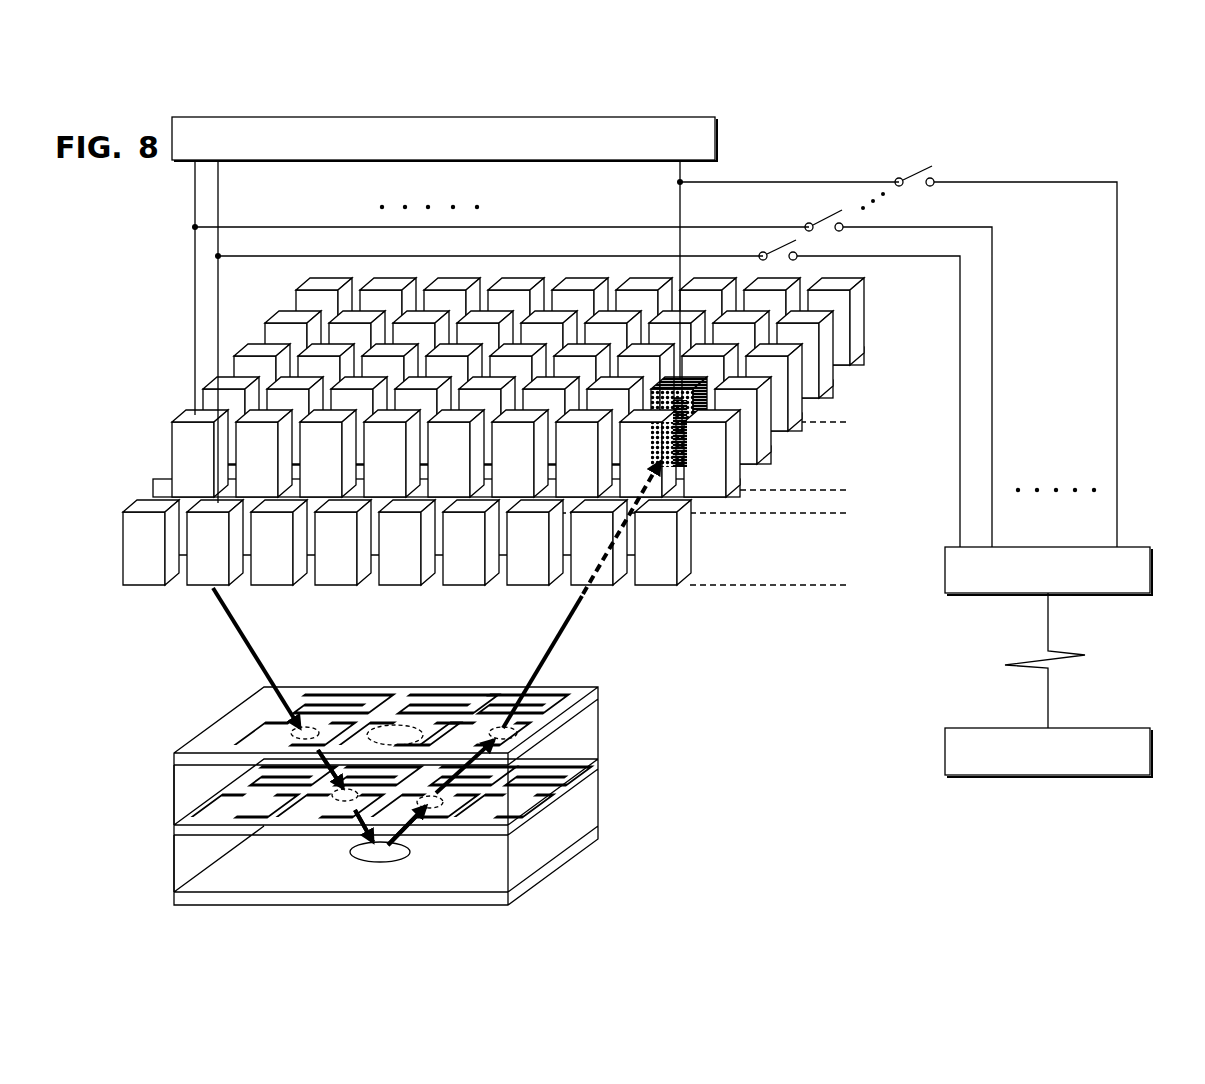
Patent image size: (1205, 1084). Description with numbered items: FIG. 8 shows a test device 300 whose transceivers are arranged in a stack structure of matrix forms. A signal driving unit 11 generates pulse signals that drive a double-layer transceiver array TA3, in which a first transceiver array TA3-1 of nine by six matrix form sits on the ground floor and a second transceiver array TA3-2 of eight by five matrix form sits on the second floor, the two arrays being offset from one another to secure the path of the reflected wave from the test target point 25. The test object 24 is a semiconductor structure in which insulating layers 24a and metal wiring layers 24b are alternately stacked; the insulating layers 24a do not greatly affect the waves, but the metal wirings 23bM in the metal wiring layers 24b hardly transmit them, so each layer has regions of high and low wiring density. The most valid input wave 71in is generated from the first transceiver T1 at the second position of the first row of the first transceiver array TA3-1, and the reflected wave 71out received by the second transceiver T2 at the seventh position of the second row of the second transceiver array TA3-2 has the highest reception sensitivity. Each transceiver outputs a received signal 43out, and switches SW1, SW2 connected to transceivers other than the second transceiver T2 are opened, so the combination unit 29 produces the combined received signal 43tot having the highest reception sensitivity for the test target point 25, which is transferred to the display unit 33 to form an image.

The signal driving unit 11 is at (715, 137).
The test device 300 is at (112, 164).
The received signal 43out is at (433, 257).
The switch SW1 is at (777, 261).
The switch SW2 is at (913, 187).
The first transceiver T1 is at (215, 542).
The second transceiver T2 is at (679, 420).
The double-layer transceiver array TA3 is at (123, 588).
The first transceiver array TA3-1 is at (519, 542).
The second transceiver array TA3-2 is at (534, 387).
The input wave 71in is at (238, 635).
The reflected wave 71out is at (566, 632).
The metal wiring 23bM is at (340, 698).
The test object 24 is at (336, 768).
The insulating layer 24a is at (174, 793).
The metal wiring layer 24b is at (174, 755).
The test target point 25 is at (400, 857).
The combination unit 29 is at (1135, 547).
The display unit 33 is at (1135, 728).
The combined received signal 43tot is at (1085, 655).